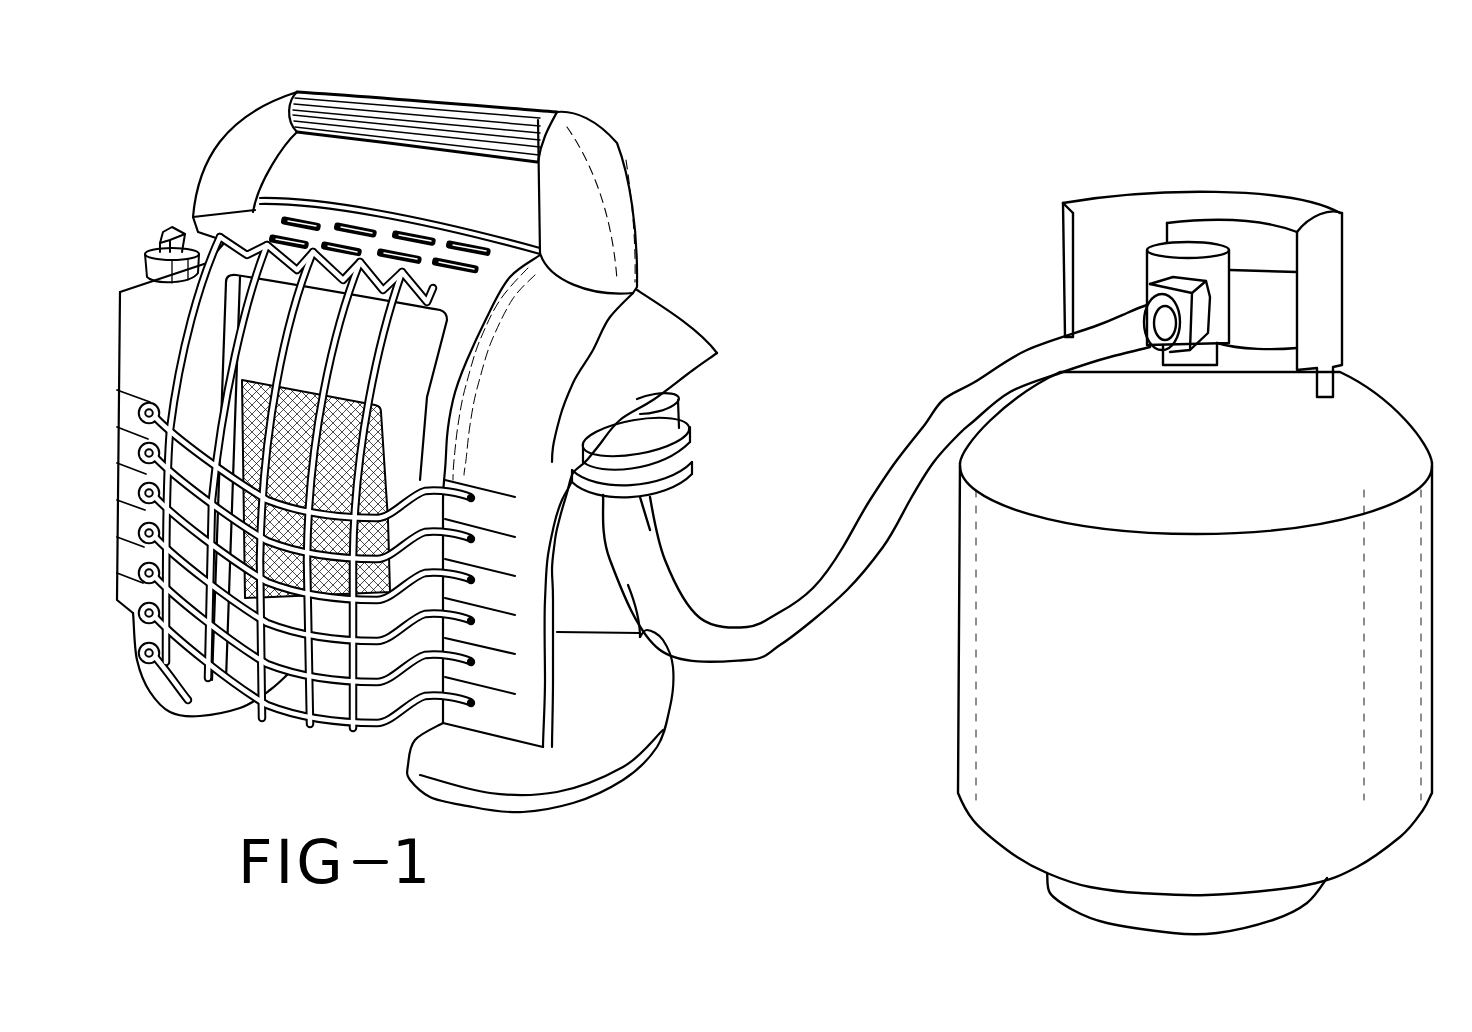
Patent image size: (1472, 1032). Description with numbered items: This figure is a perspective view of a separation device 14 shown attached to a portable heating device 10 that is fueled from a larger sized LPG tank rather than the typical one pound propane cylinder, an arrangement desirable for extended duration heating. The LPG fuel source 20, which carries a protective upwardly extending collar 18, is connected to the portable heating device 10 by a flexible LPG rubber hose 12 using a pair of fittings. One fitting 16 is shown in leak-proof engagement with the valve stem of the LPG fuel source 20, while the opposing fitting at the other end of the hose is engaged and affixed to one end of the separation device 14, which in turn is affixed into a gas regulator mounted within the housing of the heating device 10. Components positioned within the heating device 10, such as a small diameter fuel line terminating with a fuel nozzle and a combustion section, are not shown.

The portable heating device 10 is at (649, 116).
The flexible LPG rubber hose 12 is at (815, 627).
The separation device 14 is at (690, 442).
The fitting 16 is at (1180, 343).
The protective upwardly extending collar 18 is at (1343, 277).
The LPG fuel source 20 is at (1308, 174).